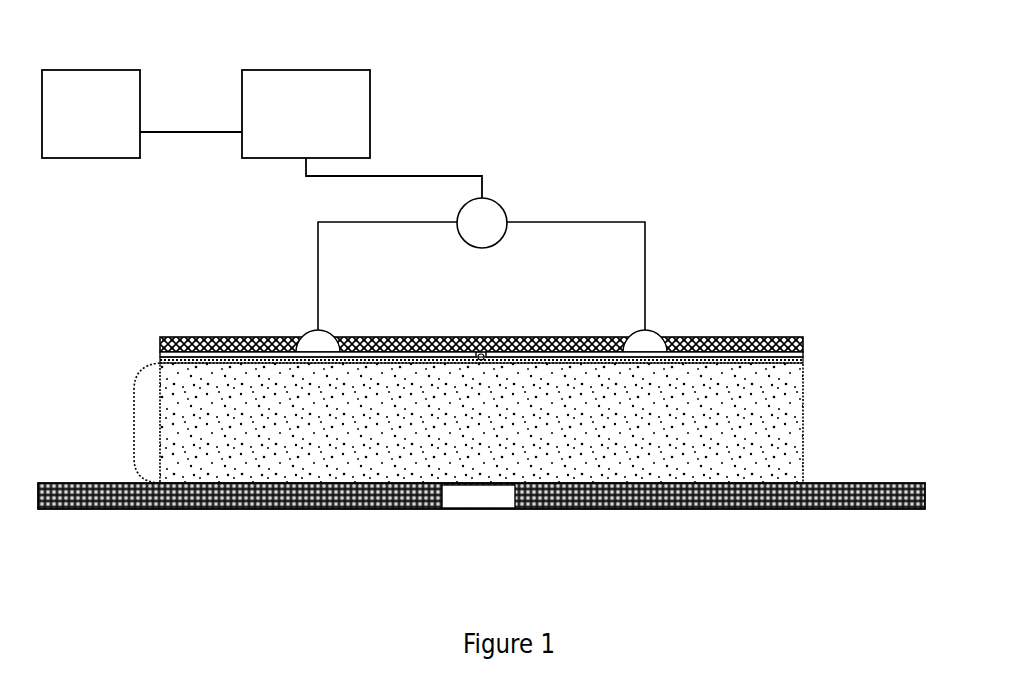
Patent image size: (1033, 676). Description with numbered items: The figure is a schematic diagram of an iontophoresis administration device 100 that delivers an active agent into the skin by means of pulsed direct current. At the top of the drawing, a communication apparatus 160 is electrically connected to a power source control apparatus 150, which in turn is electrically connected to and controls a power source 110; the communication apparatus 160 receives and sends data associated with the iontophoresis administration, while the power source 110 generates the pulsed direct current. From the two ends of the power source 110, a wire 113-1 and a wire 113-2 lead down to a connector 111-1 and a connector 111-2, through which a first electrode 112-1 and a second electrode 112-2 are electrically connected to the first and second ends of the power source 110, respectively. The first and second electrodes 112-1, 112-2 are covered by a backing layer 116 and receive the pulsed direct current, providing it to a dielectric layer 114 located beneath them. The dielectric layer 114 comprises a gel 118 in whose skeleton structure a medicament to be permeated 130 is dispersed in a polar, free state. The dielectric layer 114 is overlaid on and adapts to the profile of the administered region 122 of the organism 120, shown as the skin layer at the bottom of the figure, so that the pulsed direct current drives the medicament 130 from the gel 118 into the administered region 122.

The iontophoresis administration device 100 is at (500, 50).
The power source 110 is at (503, 210).
The connector 111-1 is at (310, 332).
The connector 111-2 is at (662, 334).
The first electrode 112-1 is at (160, 352).
The second electrode 112-2 is at (803, 352).
The wire 113-1 is at (318, 272).
The wire 113-2 is at (645, 272).
The dielectric layer 114 is at (134, 418).
The backing layer 116 is at (748, 336).
The gel 118 is at (803, 415).
The organism 120 is at (850, 483).
The administered region 122 is at (515, 508).
The medicament to be permeated 130 is at (787, 462).
The power source control apparatus 150 is at (370, 120).
The communication apparatus 160 is at (140, 121).